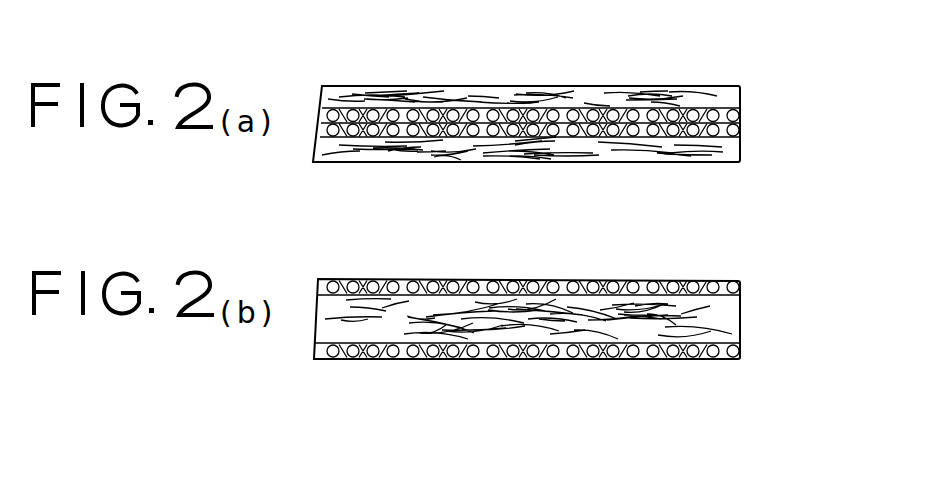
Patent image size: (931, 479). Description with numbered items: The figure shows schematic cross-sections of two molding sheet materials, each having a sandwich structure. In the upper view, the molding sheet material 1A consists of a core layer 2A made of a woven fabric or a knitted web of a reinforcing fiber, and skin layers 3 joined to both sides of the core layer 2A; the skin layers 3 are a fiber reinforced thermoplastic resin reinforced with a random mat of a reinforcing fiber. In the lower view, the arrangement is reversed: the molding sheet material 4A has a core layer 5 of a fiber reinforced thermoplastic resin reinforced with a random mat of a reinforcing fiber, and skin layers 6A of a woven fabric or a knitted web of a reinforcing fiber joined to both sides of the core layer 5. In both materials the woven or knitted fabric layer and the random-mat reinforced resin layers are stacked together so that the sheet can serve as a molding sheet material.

In FIG. 2A, the molding sheet material 1A is at (618, 87).
In FIG. 2A, the core layer 2A is at (742, 120).
In FIG. 2A, the skin layers 3 is at (795, 169).
In FIG. 2B, the molding sheet material 4A is at (623, 282).
In FIG. 2B, the core layer 5 is at (743, 318).
In FIG. 2B, the skin layers 6A is at (805, 360).